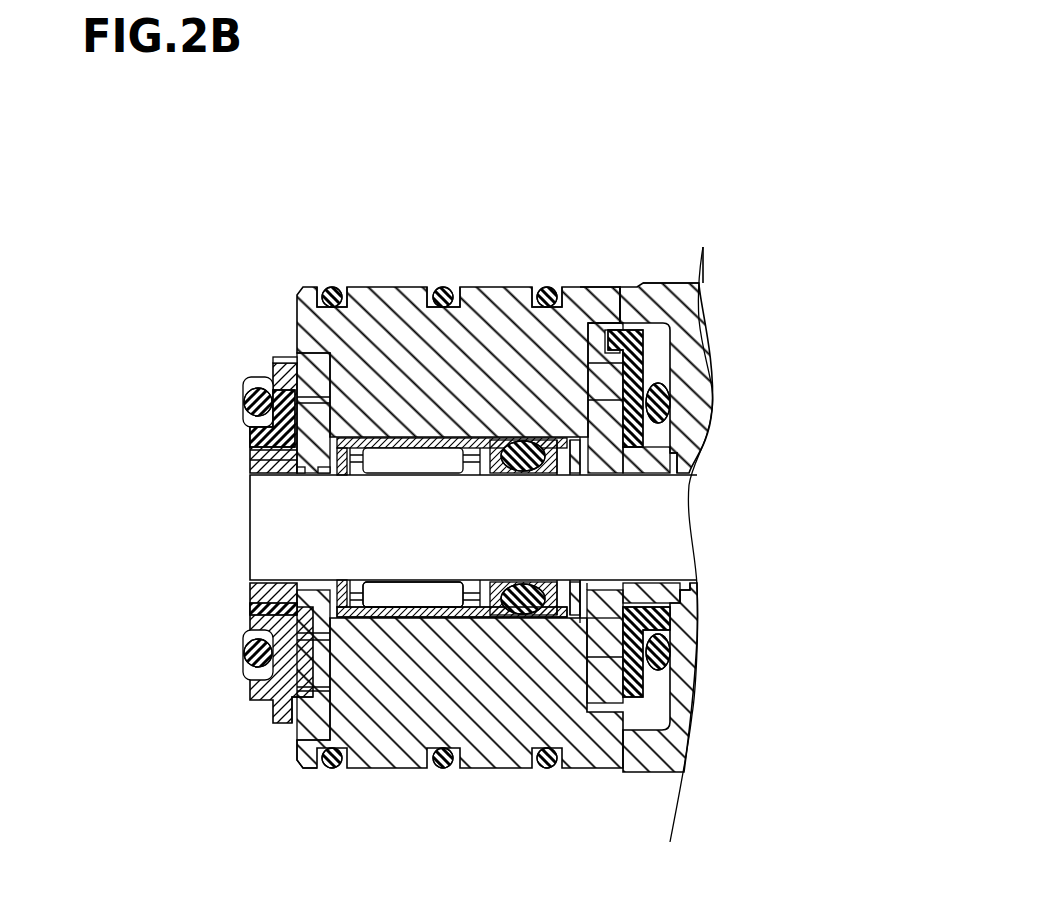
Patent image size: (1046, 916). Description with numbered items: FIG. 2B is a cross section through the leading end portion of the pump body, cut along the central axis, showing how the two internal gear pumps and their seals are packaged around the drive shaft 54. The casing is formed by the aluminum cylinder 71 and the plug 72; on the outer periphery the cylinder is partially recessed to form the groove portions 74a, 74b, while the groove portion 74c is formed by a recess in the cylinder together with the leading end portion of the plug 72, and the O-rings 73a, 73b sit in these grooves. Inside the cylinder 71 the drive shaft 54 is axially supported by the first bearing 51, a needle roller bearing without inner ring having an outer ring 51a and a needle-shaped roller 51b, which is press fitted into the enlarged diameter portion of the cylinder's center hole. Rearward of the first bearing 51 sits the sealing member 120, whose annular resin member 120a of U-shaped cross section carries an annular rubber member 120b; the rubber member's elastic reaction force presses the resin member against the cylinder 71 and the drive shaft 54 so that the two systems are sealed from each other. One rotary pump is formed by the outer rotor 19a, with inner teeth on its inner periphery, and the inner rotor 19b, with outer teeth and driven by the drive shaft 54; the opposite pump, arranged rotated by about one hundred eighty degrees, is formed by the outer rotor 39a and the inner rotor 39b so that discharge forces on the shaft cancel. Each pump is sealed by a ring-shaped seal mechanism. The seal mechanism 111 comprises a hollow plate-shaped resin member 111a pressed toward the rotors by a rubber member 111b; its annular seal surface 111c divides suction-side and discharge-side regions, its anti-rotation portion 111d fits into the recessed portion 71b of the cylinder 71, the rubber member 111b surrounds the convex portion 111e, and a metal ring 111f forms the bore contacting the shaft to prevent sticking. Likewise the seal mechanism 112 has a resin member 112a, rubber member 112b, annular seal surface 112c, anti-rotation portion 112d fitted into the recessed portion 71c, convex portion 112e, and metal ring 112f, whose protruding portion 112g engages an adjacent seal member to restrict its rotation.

The outer rotor 19a is at (268, 650).
The inner rotor 19b is at (265, 608).
The outer rotor 39a is at (602, 635).
The inner rotor 39b is at (600, 633).
The first bearing 51 is at (397, 853).
The outer ring 51a is at (382, 617).
The needle-shaped roller 51b is at (413, 600).
The drive shaft 54 is at (283, 532).
The cylinder 71 is at (403, 743).
The recessed portion 71b is at (300, 760).
The recessed portion 71c is at (588, 287).
The plug 72 is at (657, 287).
The O-ring 73a is at (325, 288).
The O-ring 73b is at (458, 287).
The groove portion 74a is at (348, 287).
The groove portion 74b is at (430, 287).
The groove portion 74c is at (563, 287).
The seal mechanism 111 is at (250, 430).
The resin member 111a is at (290, 352).
The rubber member 111b is at (265, 414).
The annular seal surface 111c is at (256, 388).
The anti-rotation portion 111d is at (300, 727).
The convex portion 111e is at (267, 451).
The metal ring 111f is at (263, 470).
The seal mechanism 112 is at (683, 405).
The resin member 112a is at (627, 365).
The rubber member 112b is at (645, 380).
The annular seal surface 112c is at (670, 690).
The anti-rotation portion 112d is at (614, 328).
The convex portion 112e is at (670, 420).
The metal ring 112f is at (678, 458).
The protruding portion 112g is at (672, 450).
The sealing member 120 is at (585, 853).
The annular resin member 120a is at (572, 605).
The annular rubber member 120b is at (517, 605).